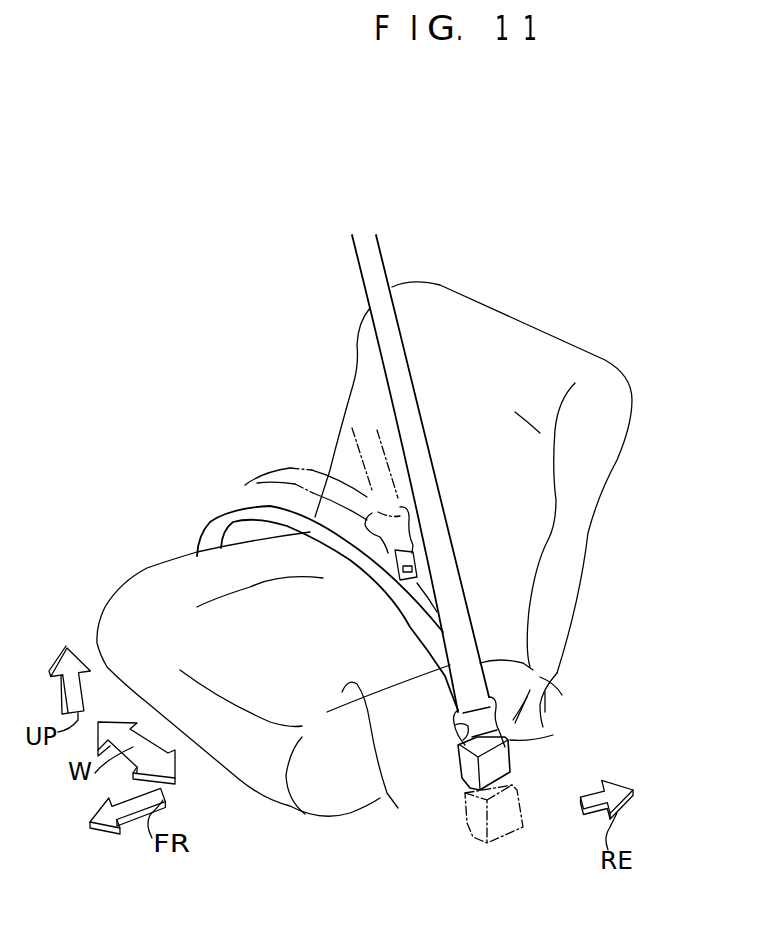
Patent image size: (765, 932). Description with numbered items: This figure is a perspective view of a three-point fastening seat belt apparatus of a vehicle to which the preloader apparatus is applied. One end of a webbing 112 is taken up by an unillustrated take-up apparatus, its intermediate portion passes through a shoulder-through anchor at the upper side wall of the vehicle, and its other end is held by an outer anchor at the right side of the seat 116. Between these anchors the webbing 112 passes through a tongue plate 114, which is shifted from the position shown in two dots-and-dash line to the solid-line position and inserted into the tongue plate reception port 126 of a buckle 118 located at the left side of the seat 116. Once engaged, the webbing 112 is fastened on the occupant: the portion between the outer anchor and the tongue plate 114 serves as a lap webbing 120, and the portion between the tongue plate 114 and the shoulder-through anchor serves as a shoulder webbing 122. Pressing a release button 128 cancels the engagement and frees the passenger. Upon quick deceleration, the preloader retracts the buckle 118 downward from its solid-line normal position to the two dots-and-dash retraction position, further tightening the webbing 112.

The webbing 112 is at (318, 469).
The tongue plate 114 is at (400, 537).
The seat 116 is at (388, 795).
The buckle 118 is at (512, 758).
The lap webbing 120 is at (381, 571).
The shoulder webbing 122 is at (440, 510).
The tongue plate reception port 126 is at (458, 724).
The release button 128 is at (553, 735).